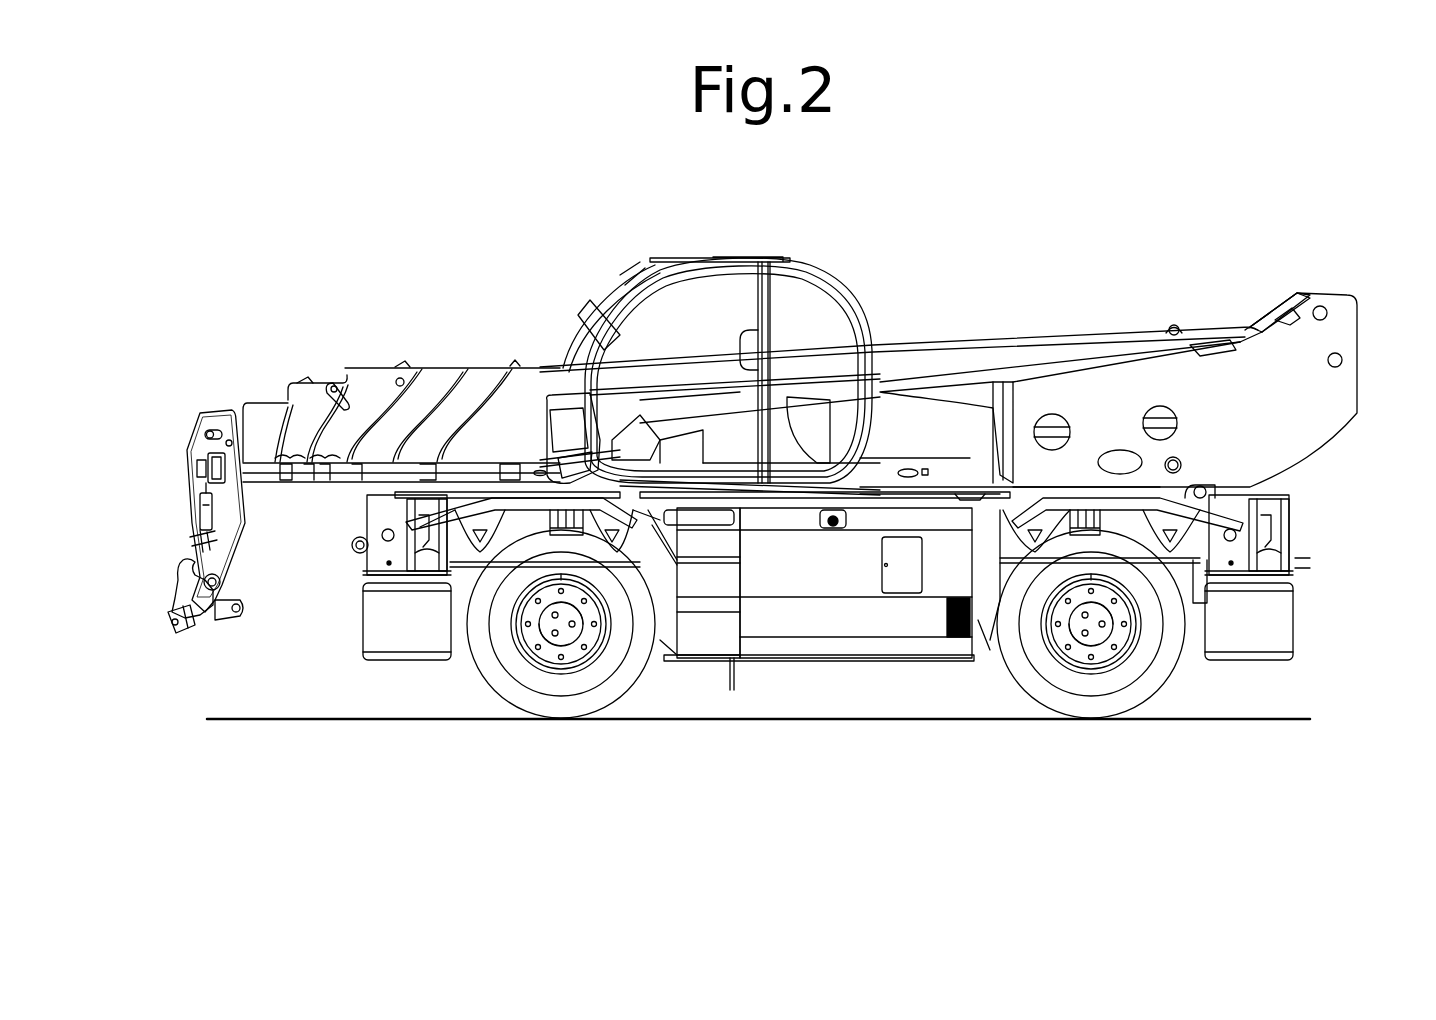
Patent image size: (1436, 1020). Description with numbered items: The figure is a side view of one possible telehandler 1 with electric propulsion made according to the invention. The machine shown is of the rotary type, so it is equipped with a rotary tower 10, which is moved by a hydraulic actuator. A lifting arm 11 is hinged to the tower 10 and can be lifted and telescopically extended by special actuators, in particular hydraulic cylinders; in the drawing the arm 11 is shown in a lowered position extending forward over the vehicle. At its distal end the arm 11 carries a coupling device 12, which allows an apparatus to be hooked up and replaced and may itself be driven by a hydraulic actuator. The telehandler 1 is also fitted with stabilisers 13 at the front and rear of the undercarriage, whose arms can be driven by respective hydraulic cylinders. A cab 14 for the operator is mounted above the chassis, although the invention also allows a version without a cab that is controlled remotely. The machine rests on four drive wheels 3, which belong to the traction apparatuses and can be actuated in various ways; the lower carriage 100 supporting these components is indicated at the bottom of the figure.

The telehandler 1 is at (1147, 248).
The drive wheels 3 is at (518, 562).
The rotary tower 10 is at (1270, 422).
The lifting arm 11 is at (317, 366).
The coupling device 12 is at (152, 535).
The stabilisers 13 is at (345, 617).
The cab 14 is at (800, 268).
The undercarriage 100 is at (840, 615).